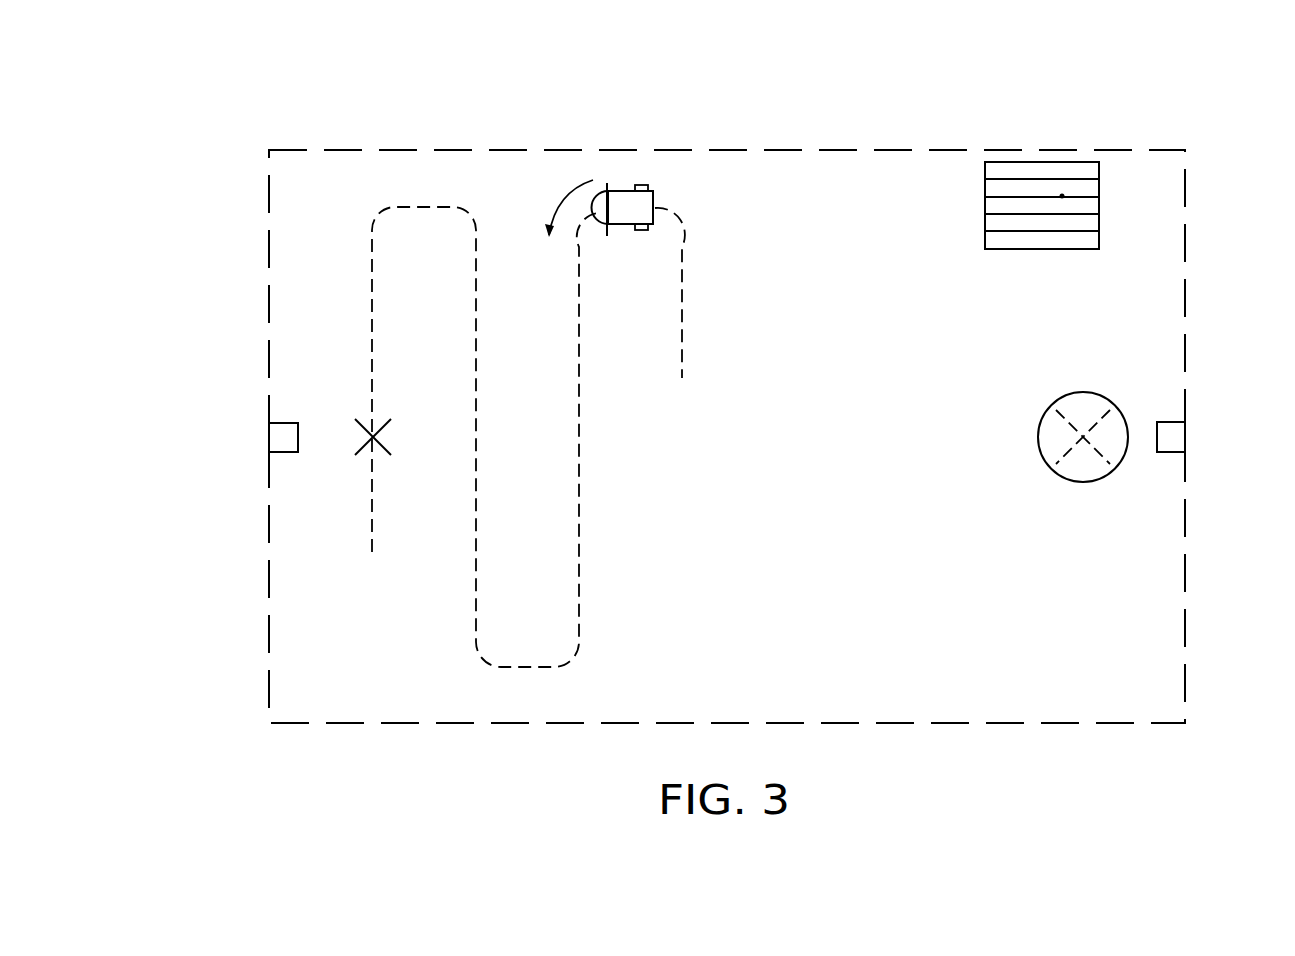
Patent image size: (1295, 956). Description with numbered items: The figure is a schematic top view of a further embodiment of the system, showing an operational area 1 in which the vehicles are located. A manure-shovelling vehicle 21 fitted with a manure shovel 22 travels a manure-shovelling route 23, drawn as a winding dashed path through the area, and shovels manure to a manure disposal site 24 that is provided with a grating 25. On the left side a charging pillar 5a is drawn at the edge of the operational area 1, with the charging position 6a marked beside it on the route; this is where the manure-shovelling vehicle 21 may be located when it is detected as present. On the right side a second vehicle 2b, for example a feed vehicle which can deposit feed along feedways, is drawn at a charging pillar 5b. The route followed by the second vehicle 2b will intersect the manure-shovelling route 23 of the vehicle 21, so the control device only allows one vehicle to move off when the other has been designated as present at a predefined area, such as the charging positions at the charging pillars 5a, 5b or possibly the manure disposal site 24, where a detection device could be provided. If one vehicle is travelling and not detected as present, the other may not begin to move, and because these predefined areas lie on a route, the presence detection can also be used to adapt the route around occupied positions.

The operational area 1 is at (817, 501).
The second vehicle 2b is at (1083, 392).
The charging pillar 5a is at (270, 437).
The charging pillar 5b is at (1185, 437).
The target spot mark 6a is at (373, 437).
The manure-shovelling vehicle 21 is at (626, 207).
The manure shovel 22 is at (608, 187).
The manure-shovelling route 23 is at (682, 310).
The manure disposal site 24 is at (984, 205).
The grating 25 is at (1062, 196).